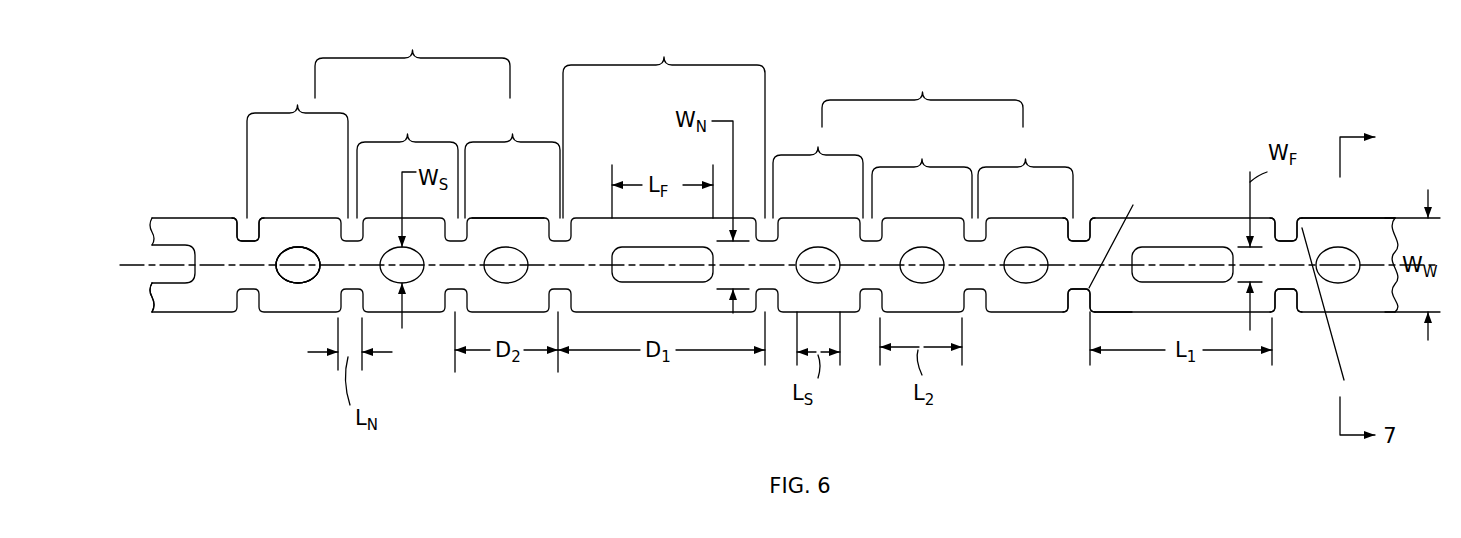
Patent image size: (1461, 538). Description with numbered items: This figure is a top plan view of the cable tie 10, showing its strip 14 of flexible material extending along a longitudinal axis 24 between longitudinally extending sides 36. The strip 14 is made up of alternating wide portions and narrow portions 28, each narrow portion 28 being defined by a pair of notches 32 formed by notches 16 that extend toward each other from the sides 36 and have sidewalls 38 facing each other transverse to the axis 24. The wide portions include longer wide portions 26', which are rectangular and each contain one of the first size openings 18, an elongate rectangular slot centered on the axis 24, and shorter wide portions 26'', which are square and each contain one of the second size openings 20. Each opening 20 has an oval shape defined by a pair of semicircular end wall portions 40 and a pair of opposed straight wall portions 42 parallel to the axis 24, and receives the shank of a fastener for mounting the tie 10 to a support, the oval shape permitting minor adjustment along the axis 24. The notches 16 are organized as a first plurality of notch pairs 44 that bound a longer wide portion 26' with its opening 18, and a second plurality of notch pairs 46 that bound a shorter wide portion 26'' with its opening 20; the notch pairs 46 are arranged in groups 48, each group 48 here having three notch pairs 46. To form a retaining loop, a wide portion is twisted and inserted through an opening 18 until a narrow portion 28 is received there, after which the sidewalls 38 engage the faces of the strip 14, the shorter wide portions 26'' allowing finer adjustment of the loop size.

The cable tie 10 is at (951, 55).
The strip 14 is at (151, 314).
The notches 16 is at (1084, 216).
The first size openings 18 is at (175, 257).
The second size openings 20 is at (1343, 258).
The longitudinal axis 24 is at (133, 262).
The longer wide portions 26' is at (655, 265).
The shorter wide portions 26'' is at (834, 306).
The narrow portions 28 is at (243, 278).
The pair of notches 32 is at (1082, 235).
The longitudinally extending sides 36 is at (1333, 218).
The sidewalls 38 is at (240, 222).
The semicircular end wall portions 40 is at (277, 262).
The straight wall portions 42 is at (300, 247).
The first plurality of notch pairs 44 is at (664, 120).
The second plurality of notch pairs 46 is at (660, 148).
The groups of notch pairs 48 is at (669, 74).